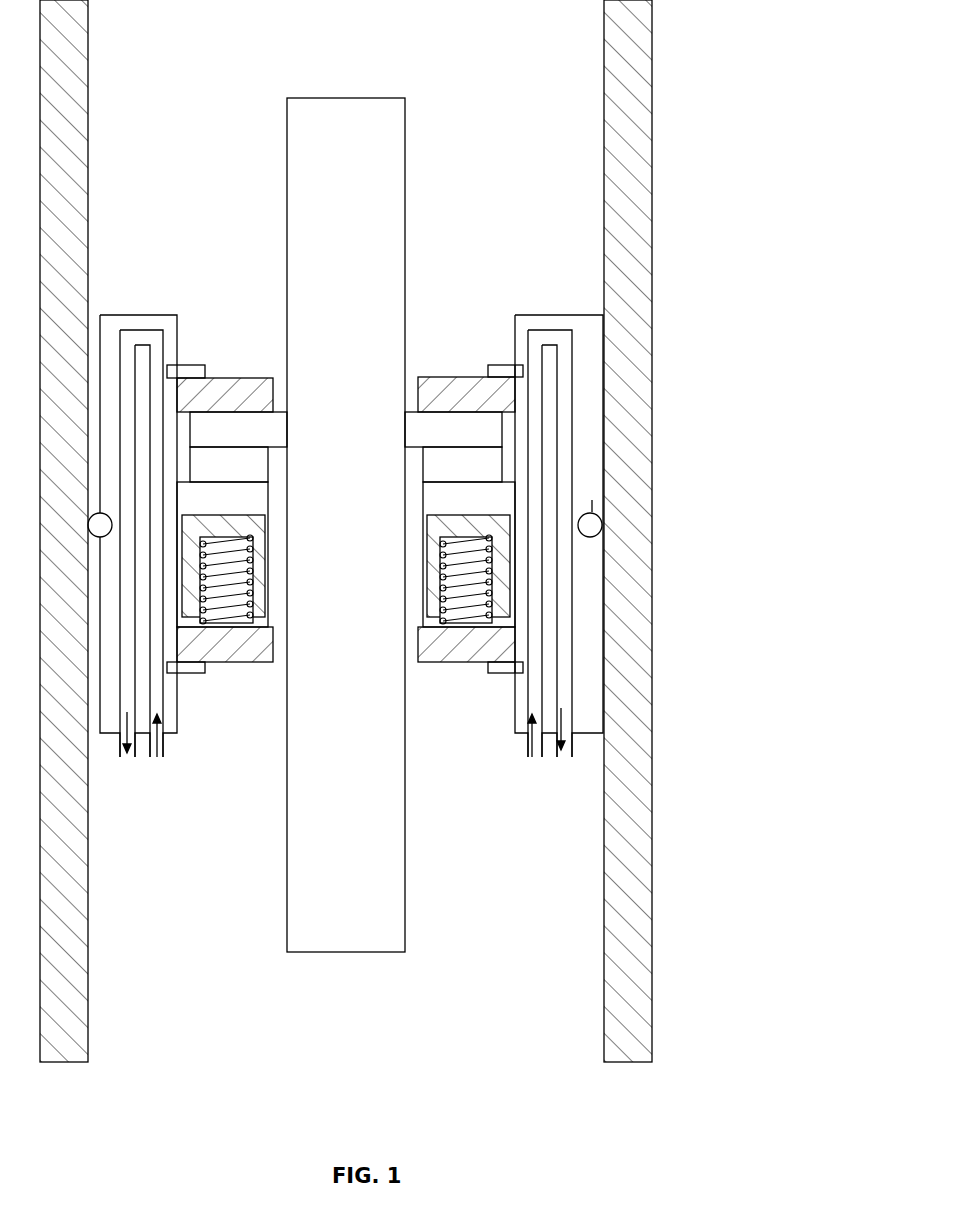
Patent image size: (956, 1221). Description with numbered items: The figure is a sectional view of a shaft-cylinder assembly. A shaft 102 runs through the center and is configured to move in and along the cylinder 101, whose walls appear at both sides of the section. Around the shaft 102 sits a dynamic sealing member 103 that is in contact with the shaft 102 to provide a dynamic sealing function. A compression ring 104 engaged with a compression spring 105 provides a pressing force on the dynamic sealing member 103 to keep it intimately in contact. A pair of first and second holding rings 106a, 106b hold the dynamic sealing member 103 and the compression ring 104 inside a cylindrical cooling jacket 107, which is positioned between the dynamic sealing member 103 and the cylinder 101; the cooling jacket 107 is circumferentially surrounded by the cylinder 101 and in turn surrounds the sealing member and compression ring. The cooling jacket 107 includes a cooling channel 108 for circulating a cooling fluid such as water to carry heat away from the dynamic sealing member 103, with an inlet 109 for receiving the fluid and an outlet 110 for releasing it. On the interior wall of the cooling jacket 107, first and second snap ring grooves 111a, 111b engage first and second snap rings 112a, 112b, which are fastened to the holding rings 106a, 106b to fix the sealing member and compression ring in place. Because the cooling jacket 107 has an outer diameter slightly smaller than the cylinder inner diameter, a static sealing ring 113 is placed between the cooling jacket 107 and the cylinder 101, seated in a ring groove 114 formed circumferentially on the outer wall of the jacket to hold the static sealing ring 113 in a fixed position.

The cylinder 101 is at (396, 531).
The shaft 102 is at (402, 515).
The dynamic sealing member 103 is at (411, 447).
The compression ring 104 is at (417, 545).
The compression spring 105 is at (408, 579).
The first holding ring 106a is at (421, 379).
The second holding ring 106b is at (425, 666).
The cylindrical cooling jacket 107 is at (627, 510).
The cooling channel 108 is at (638, 543).
The inlet 109 is at (503, 798).
The outlet 110 is at (548, 795).
The first snap ring groove 111a is at (471, 320).
The second snap ring groove 111b is at (468, 730).
The first snap ring 112a is at (428, 339).
The second snap ring 112b is at (428, 718).
The static sealing ring 113 is at (666, 505).
The ring groove 114 is at (592, 510).